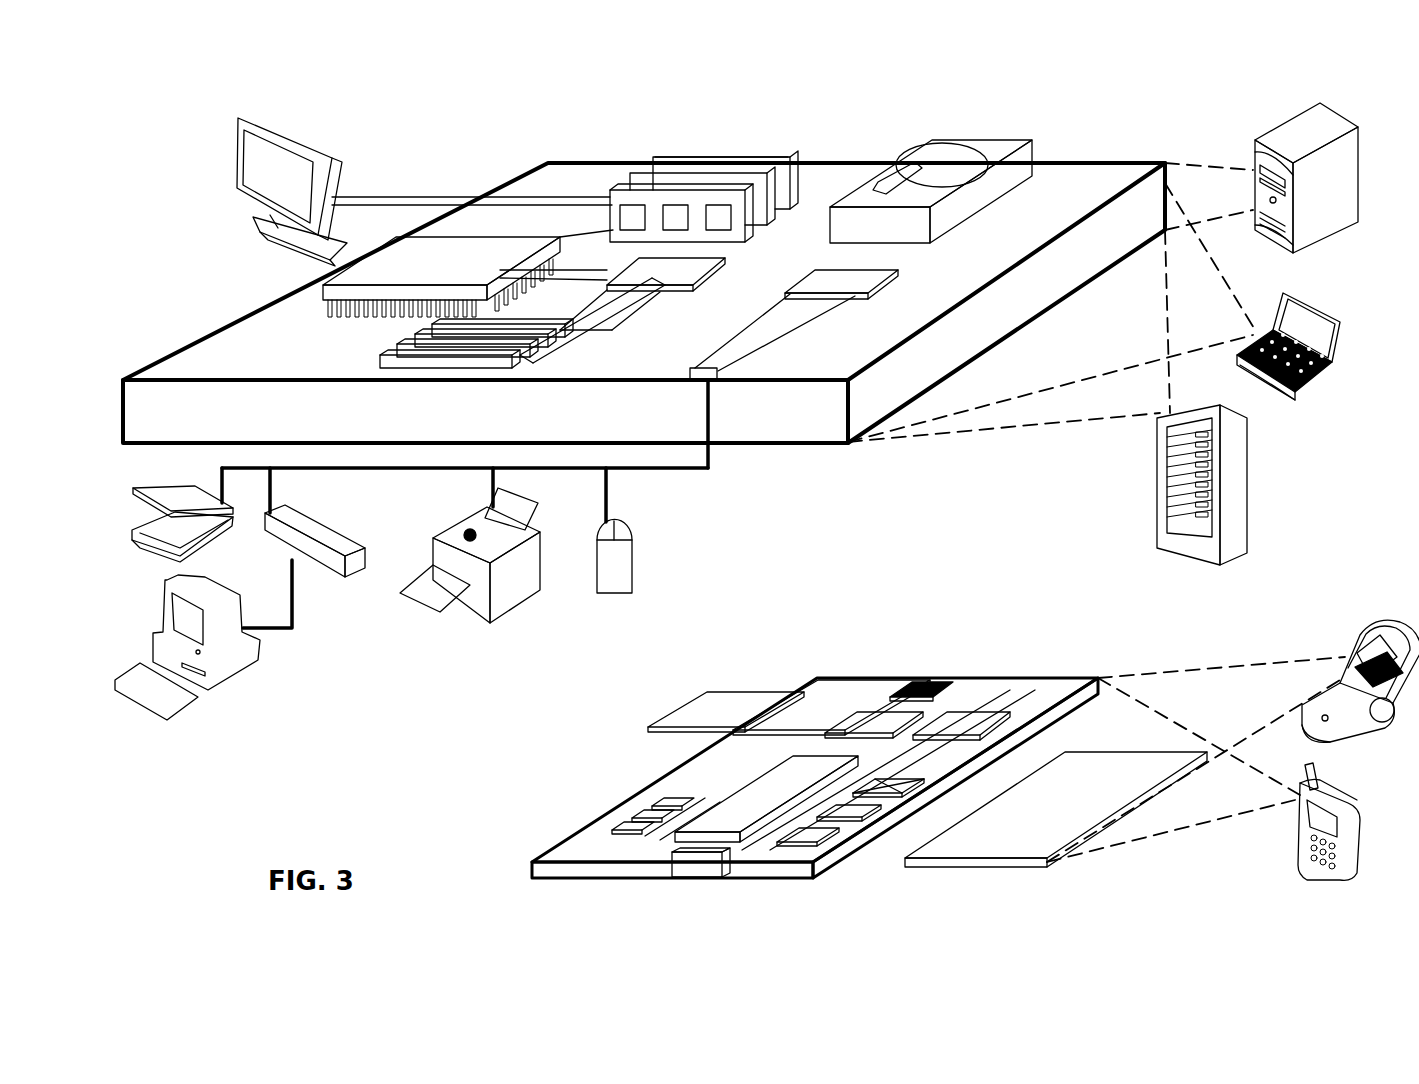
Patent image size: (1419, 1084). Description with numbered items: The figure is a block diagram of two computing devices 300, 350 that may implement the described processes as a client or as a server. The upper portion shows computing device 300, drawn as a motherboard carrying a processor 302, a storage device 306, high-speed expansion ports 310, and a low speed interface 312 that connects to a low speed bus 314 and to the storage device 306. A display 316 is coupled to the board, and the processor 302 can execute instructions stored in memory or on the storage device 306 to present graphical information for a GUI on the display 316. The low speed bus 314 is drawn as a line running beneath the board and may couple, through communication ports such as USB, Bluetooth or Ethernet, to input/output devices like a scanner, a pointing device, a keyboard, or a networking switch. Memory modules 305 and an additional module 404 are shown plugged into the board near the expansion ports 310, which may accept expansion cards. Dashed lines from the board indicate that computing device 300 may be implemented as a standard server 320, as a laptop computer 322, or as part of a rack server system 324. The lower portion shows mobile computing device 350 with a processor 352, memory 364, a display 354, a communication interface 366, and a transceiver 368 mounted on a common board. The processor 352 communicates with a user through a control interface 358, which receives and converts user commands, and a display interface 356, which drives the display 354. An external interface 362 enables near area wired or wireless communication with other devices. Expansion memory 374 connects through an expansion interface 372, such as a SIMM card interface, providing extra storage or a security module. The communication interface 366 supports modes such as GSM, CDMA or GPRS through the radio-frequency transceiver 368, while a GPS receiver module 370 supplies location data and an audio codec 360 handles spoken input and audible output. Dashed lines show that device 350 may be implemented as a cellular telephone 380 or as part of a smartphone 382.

The computing device 300 is at (508, 132).
The processor 302 is at (330, 300).
The memory modules 305 is at (650, 163).
The storage device 306 is at (945, 140).
The high-speed expansion ports 310 is at (390, 356).
The low speed interface 312 is at (832, 280).
The low speed bus 314 is at (714, 382).
The display 316 is at (256, 116).
The standard server 320 is at (1265, 128).
The laptop computer 322 is at (1312, 392).
The rack server system 324 is at (1158, 520).
The computing device 350 is at (612, 743).
The processor 352 is at (745, 815).
The display 354 is at (1020, 838).
The display interface 356 is at (805, 845).
The control interface 358 is at (850, 825).
The audio codec 360 is at (890, 800).
The external interface 362 is at (690, 870).
The memory 364 is at (640, 825).
The communication interface 366 is at (868, 722).
The transceiver 368 is at (970, 718).
The GPS receiver module 370 is at (930, 690).
The expansion interface 372 is at (795, 690).
The expansion memory 374 is at (690, 715).
The flip mobile phone 380 is at (1368, 628).
The smartphone 382 is at (1300, 830).
The memory module 404 is at (686, 155).